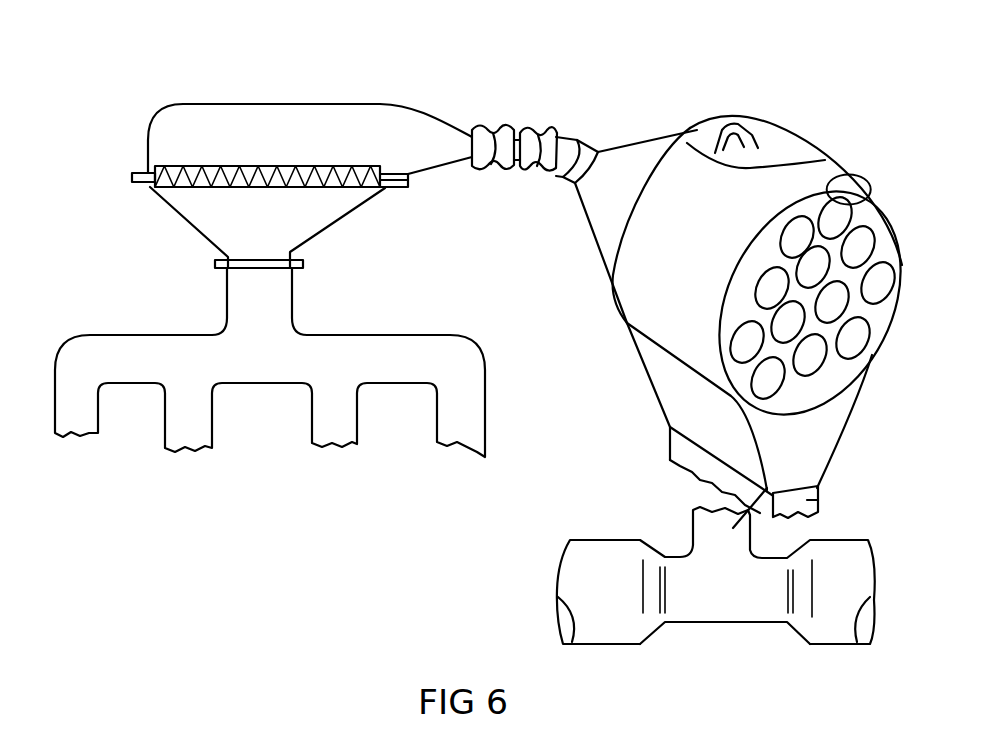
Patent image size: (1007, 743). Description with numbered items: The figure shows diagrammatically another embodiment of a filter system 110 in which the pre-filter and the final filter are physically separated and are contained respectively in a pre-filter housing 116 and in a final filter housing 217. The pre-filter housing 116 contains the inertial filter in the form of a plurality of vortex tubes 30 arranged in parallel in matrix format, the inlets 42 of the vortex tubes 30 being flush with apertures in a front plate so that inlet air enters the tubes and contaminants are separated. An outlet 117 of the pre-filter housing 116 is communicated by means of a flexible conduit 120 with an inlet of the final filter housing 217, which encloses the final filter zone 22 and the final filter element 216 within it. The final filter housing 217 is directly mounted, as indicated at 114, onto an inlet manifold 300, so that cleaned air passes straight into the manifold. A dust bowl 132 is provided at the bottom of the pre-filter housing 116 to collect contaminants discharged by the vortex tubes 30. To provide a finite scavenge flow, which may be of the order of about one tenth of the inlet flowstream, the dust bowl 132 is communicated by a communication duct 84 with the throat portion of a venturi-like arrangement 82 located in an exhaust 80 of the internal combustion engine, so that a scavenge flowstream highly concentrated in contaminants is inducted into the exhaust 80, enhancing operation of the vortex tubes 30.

The final filter zone 22 is at (281, 150).
The screw conveyor 216 is at (334, 148).
The final filter housing 217 is at (442, 117).
The direct mounting 114 is at (258, 254).
The filter system 110 is at (139, 283).
The inlet manifold 300 is at (349, 315).
The flexible conduit 120 is at (498, 139).
The outlet of the pre-filter housing 117 is at (646, 126).
The pre-filter housing 116 is at (640, 250).
The inlets of the vortex tubes 42 is at (845, 313).
The vortex tube 30 is at (757, 148).
The dust bowl 132 is at (730, 415).
The communication duct 84 is at (767, 490).
The exhaust of the internal combustion engine 80 is at (605, 558).
The venturi-like arrangement 82 is at (724, 631).